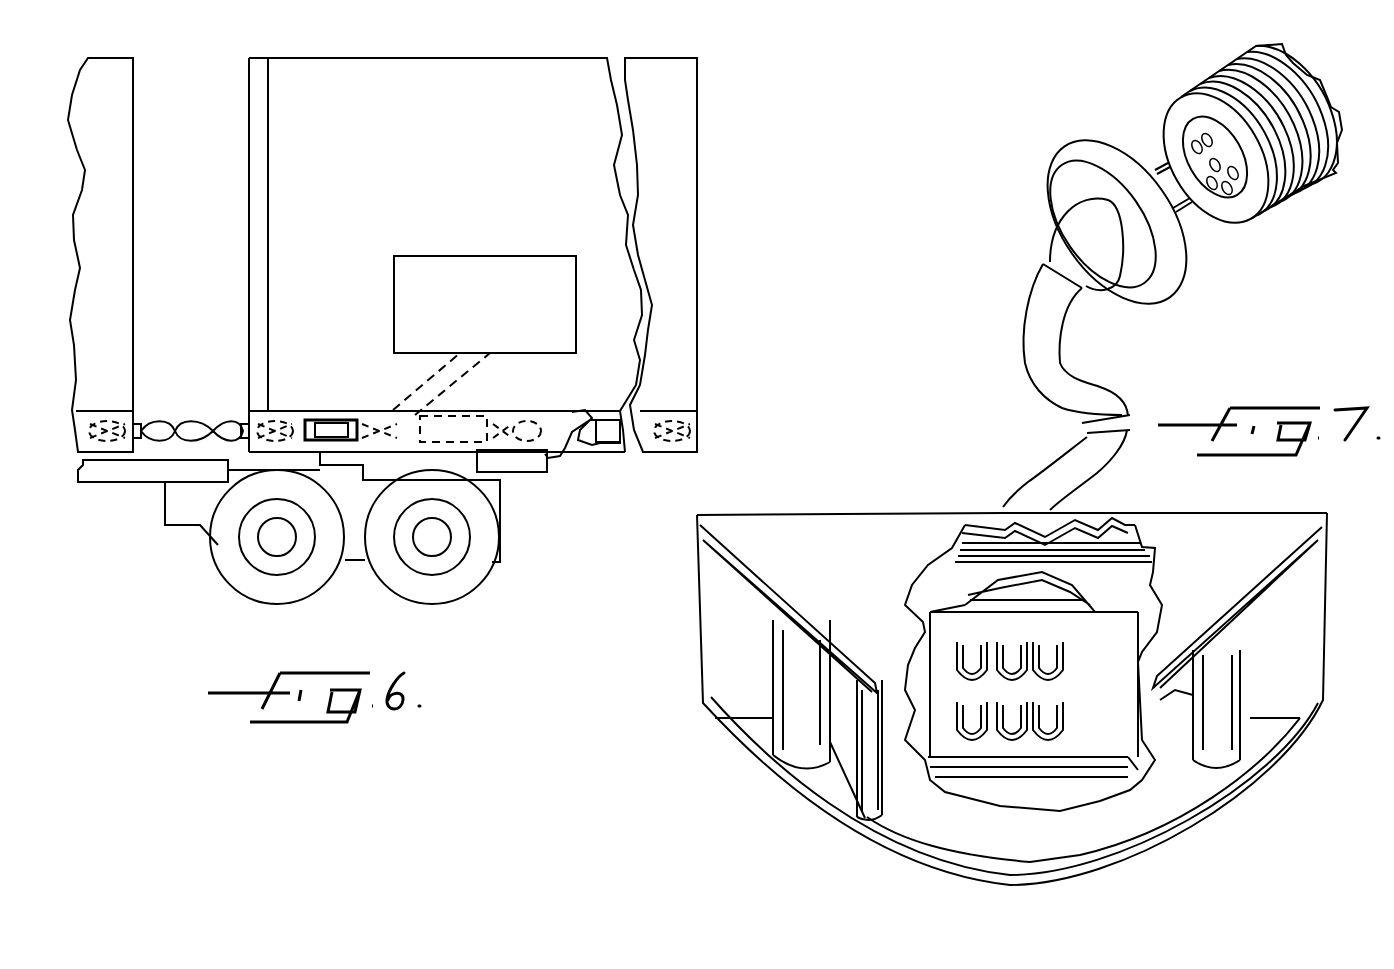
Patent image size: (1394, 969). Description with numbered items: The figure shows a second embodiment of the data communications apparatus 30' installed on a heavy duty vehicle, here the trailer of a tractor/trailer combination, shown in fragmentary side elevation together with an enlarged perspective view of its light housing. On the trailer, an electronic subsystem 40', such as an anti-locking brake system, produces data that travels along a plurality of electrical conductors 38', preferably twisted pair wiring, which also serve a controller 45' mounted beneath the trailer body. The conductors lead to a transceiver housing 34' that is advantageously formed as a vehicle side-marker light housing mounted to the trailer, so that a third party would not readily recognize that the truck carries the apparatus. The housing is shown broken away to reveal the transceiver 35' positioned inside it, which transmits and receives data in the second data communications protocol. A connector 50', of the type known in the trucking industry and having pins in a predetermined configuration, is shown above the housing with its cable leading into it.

In FIG. 6, the data communications apparatus 30' is at (773, 255).
In FIG. 7, the data communications apparatus 30' is at (936, 369).
In FIG. 6, the transceiver housing 34' is at (582, 488).
In FIG. 7, the transceiver housing 34' is at (973, 699).
In FIG. 7, the transceiver 35' is at (1091, 738).
In FIG. 6, the electrical conductors 38' is at (389, 378).
In FIG. 6, the electronic subsystem 40' is at (485, 284).
In FIG. 6, the controller 45' is at (510, 532).
In FIG. 7, the connector 50' is at (1252, 192).